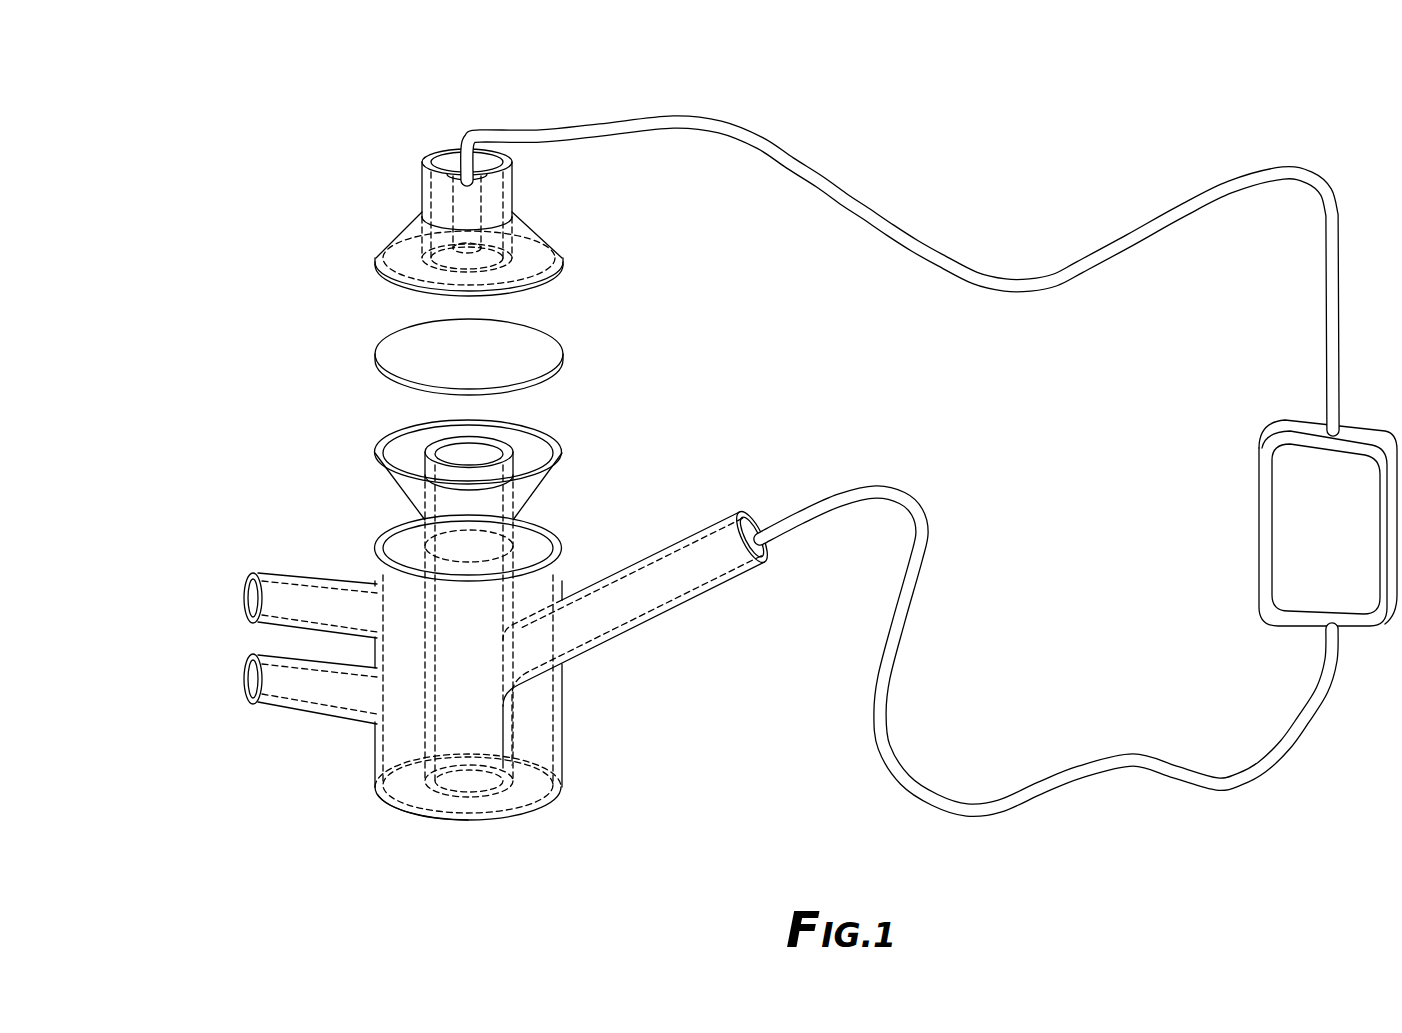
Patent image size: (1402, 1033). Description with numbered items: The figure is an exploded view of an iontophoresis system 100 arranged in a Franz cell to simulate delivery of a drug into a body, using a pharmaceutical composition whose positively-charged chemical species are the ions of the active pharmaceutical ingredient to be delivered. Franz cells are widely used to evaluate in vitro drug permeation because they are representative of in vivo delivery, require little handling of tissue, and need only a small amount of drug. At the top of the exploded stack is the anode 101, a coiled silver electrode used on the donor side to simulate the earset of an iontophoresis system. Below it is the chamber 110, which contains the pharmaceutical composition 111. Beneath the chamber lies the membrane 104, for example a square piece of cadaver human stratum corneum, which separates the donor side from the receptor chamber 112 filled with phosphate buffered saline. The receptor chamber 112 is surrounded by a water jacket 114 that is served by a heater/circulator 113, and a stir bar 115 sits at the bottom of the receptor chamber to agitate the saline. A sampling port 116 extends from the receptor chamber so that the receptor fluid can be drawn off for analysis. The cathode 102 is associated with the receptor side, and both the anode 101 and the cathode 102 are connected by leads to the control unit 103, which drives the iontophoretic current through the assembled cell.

The iontophoresis system 100 is at (1080, 100).
The anode 101 is at (427, 170).
The cathode 102 is at (610, 618).
The control unit 103 is at (1303, 493).
The membrane 104 is at (402, 357).
The chamber 110 is at (400, 257).
The pharmaceutical composition 111 is at (453, 250).
The receptor chamber 112 is at (478, 727).
The heater/circulator 113 is at (243, 678).
The water jacket 114 is at (405, 779).
The stir bar 115 is at (467, 780).
The sampling port 116 is at (710, 553).